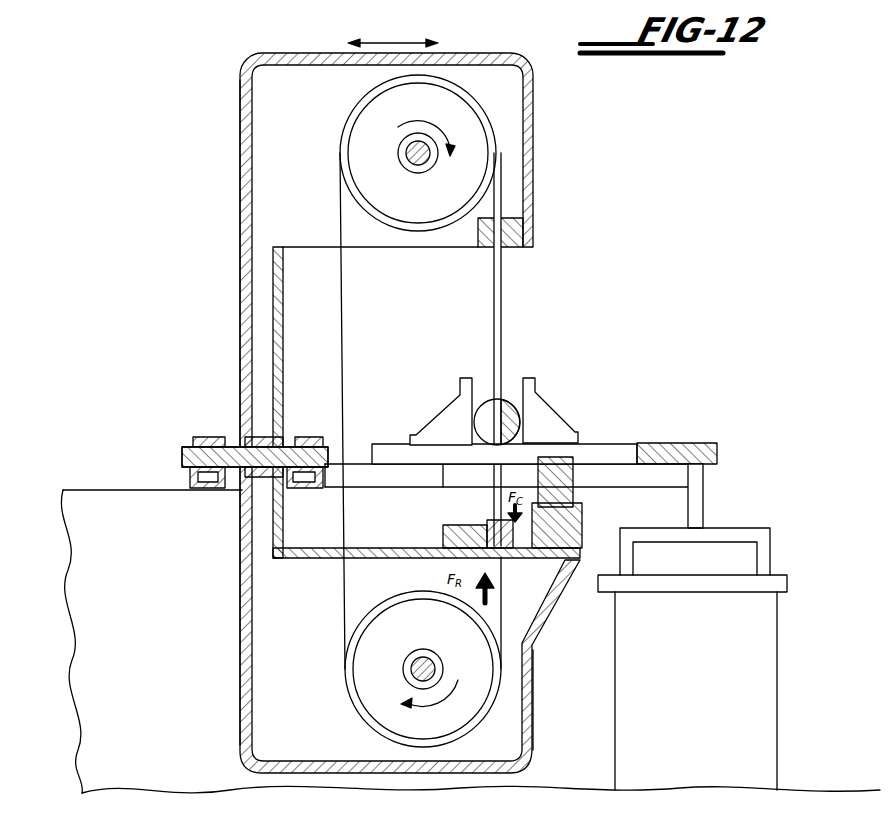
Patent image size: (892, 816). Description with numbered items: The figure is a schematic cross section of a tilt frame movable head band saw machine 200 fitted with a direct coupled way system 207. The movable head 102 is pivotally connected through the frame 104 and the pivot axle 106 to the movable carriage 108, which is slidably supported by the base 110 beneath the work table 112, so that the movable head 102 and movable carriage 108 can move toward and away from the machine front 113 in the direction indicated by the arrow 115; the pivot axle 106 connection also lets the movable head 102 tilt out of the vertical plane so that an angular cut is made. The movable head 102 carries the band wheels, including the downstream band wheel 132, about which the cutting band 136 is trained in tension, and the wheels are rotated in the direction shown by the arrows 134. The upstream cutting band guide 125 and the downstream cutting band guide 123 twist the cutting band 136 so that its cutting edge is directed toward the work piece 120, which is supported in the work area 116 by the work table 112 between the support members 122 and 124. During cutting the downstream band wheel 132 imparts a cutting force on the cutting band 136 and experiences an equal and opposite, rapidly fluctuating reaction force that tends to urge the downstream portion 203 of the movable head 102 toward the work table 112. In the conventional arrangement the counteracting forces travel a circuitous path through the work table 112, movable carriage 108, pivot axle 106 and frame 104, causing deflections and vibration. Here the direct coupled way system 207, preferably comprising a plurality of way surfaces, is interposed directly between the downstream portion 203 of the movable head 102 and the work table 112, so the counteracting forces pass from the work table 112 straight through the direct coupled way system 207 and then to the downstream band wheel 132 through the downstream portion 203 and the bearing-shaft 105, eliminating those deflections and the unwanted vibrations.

The movable head 102 is at (250, 72).
The frame 104 is at (240, 320).
The bearing-shaft 105 is at (455, 645).
The pivot axle 106 is at (182, 450).
The movable carriage 108 is at (355, 464).
The base 110 is at (673, 510).
The work table 112 is at (610, 452).
The machine front 113 is at (732, 462).
The arrow 115 is at (393, 34).
The work area 116 is at (514, 384).
The work piece 120 is at (508, 394).
The support member 122 is at (462, 380).
The downstream cutting band guide 123 is at (443, 540).
The support member 124 is at (547, 410).
The upstream cutting band guide 125 is at (478, 228).
The downstream band wheel 132 is at (375, 710).
The arrows 134 is at (428, 418).
The cutting band 136 is at (503, 288).
The tilt frame movable head band saw machine 200 is at (562, 211).
The downstream portion 203 is at (533, 725).
The direct coupled way system 207 is at (580, 475).